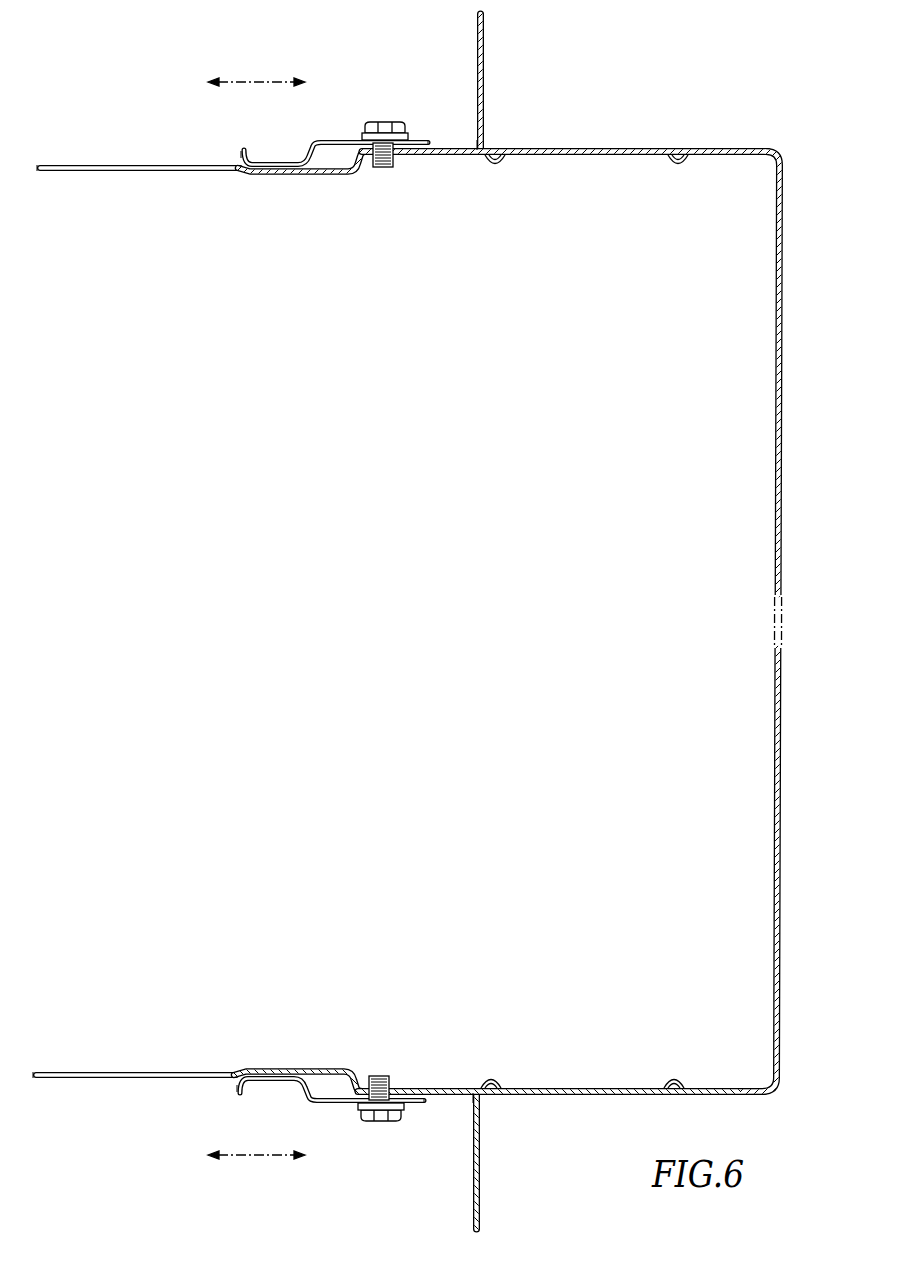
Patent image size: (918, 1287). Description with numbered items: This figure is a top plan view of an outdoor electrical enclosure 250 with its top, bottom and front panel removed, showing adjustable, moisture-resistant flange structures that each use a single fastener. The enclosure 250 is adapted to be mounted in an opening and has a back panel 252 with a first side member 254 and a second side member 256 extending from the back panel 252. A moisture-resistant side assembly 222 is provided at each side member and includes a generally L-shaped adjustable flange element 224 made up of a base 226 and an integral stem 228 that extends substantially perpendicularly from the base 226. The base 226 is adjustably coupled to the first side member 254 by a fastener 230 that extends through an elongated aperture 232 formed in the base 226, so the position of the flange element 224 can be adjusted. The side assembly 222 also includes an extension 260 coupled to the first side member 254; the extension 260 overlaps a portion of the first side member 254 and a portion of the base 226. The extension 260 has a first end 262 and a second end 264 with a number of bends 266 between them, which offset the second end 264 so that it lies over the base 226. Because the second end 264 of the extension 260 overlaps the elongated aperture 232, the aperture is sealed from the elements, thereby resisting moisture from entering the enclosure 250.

The moisture-resistant side assembly 222 is at (351, 99).
The adjustable flange element 224 is at (497, 30).
The base 226 is at (450, 147).
The stem 228 is at (485, 100).
The fastener 230 is at (385, 121).
The elongated aperture 232 is at (400, 154).
The outdoor electrical enclosure 250 is at (117, 970).
The back panel 252 is at (781, 668).
The first side member 254 is at (281, 1049).
The second side member 256 is at (253, 200).
The extension 260 is at (160, 166).
The first end 262 is at (41, 156).
The second end 264 is at (426, 129).
The bends 266 is at (302, 158).